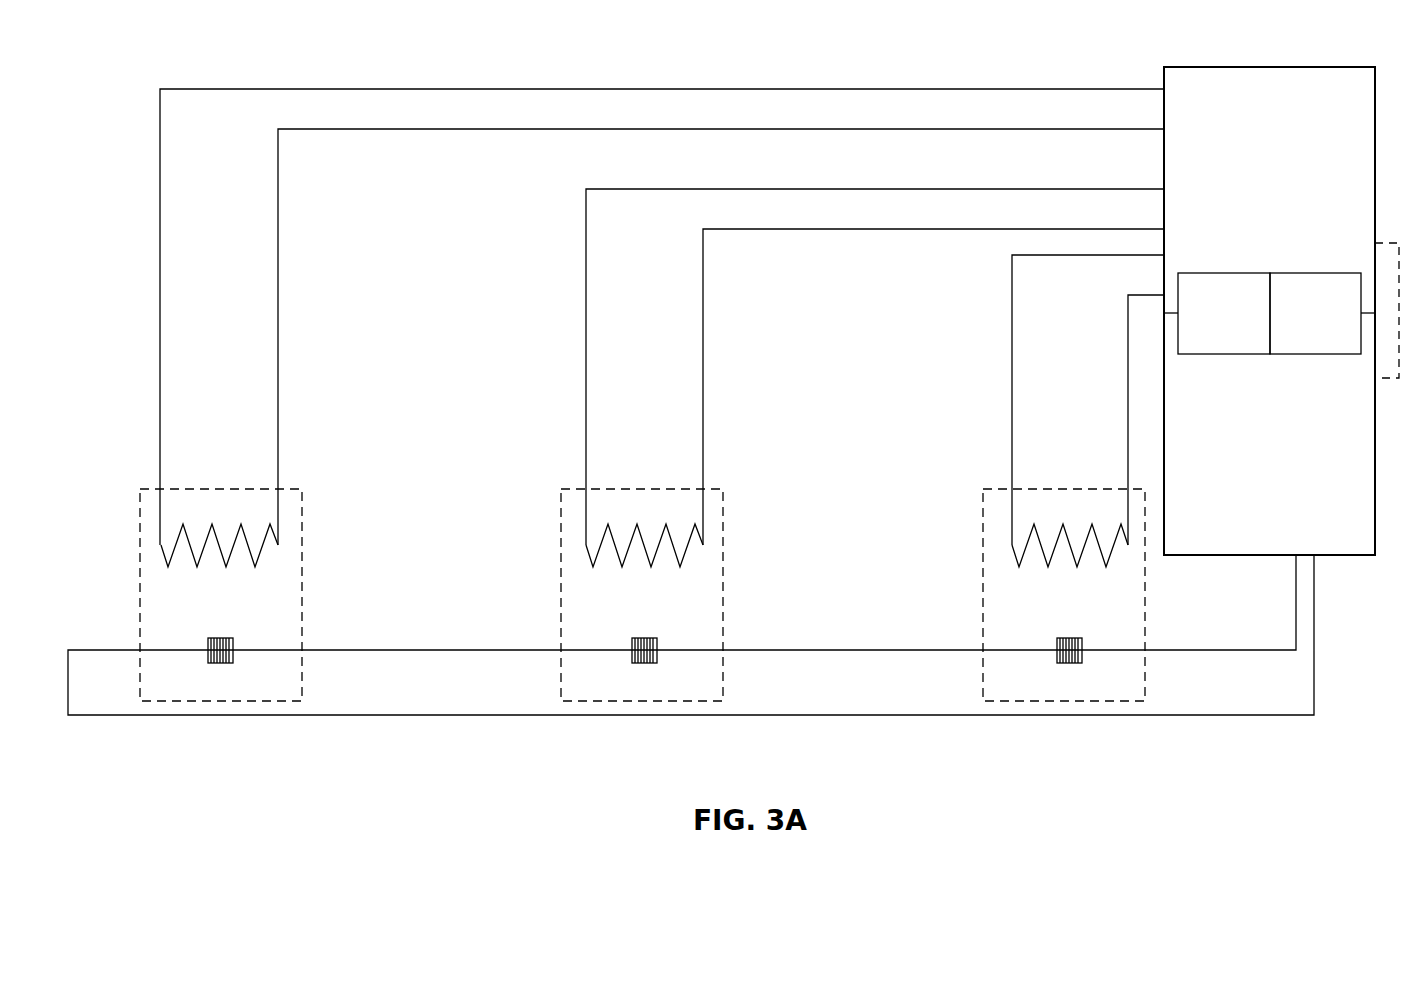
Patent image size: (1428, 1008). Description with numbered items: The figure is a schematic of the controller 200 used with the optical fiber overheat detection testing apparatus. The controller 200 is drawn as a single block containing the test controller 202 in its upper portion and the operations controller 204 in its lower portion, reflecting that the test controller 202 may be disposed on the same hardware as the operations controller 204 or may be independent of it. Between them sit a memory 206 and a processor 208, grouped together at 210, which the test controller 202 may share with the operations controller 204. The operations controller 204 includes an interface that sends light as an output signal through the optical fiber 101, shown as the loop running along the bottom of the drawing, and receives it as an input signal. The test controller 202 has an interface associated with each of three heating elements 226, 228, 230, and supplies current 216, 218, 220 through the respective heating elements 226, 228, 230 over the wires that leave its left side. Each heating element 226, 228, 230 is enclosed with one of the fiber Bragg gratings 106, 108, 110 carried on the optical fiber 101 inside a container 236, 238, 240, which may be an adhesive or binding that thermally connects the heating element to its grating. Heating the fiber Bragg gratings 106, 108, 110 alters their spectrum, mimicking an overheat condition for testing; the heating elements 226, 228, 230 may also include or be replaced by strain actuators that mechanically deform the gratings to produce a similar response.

The controller 200 is at (1240, 63).
The test controller 202 is at (1298, 85).
The operations controller 204 is at (1355, 492).
The memory 206 is at (1182, 273).
The processor 208 is at (1278, 273).
The computing device 210 is at (1390, 240).
The current 216 is at (1130, 75).
The current 218 is at (1130, 173).
The current 220 is at (1130, 243).
The heating element 226 is at (183, 530).
The heating element 228 is at (608, 530).
The heating element 230 is at (1034, 530).
The container 236 is at (300, 490).
The container 238 is at (720, 490).
The container 240 is at (995, 488).
The fiber Bragg grating 106 is at (221, 637).
The fiber Bragg grating 108 is at (646, 637).
The fiber Bragg grating 110 is at (1071, 637).
The optical fiber 101 is at (804, 720).